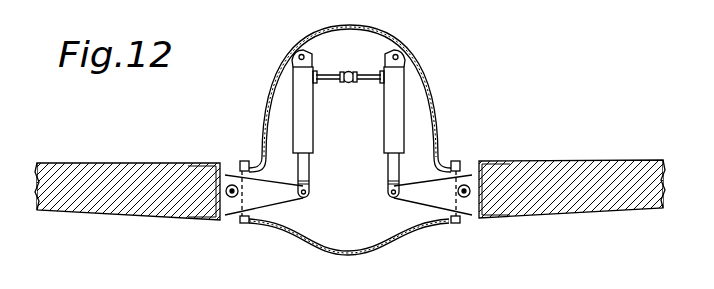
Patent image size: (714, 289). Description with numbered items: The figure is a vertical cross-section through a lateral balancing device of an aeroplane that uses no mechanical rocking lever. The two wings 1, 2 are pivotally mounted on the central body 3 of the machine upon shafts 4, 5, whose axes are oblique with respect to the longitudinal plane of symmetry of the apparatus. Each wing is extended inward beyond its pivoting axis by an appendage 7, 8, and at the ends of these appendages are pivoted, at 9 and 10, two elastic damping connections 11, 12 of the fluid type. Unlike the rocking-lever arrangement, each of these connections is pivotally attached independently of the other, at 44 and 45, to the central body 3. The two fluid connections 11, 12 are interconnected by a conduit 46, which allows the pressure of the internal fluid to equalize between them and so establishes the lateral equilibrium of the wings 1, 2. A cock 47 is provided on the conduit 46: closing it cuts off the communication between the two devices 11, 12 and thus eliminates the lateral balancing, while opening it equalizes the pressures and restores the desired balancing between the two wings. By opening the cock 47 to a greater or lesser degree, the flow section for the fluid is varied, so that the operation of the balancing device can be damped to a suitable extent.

The wing 1 is at (570, 172).
The wing 2 is at (136, 178).
The central body 3 is at (439, 141).
The shaft 4 is at (467, 185).
The shaft 5 is at (233, 185).
The appendage 7 is at (446, 195).
The appendage 8 is at (271, 196).
The pivot 9 is at (383, 206).
The pivot 10 is at (315, 206).
The elastic damping connection 11 is at (396, 111).
The elastic damping connection 12 is at (299, 107).
The pivot 44 is at (403, 56).
The pivot 45 is at (294, 57).
The conduit 46 is at (372, 81).
The cock 47 is at (349, 71).